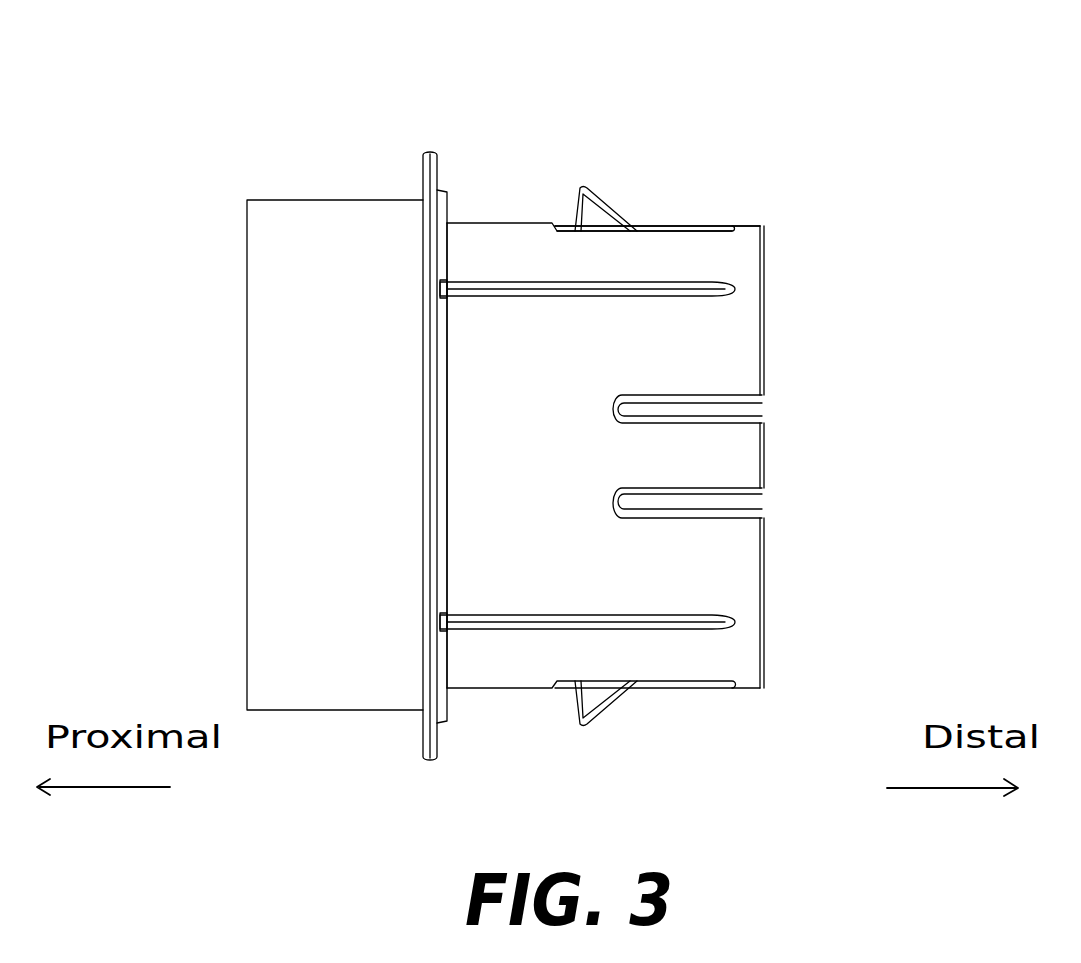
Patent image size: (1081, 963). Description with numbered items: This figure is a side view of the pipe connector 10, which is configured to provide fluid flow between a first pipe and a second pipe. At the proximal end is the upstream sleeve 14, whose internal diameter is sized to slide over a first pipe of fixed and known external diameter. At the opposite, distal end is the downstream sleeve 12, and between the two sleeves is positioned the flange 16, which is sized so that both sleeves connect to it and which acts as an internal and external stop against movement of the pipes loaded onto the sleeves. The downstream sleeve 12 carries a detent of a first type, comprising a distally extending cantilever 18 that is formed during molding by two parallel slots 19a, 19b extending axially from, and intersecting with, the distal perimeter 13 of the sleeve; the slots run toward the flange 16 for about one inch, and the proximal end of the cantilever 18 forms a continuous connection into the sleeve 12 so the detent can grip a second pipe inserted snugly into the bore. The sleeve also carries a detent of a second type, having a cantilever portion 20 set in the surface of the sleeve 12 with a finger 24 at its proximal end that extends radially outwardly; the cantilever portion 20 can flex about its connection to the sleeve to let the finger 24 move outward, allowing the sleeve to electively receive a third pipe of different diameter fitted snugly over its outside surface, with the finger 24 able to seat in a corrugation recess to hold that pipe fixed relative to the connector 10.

The pipe connector 10 is at (645, 84).
The downstream sleeve 12 is at (727, 340).
The distal perimeter 13 is at (763, 608).
The upstream sleeve 14 is at (255, 317).
The flange 16 is at (442, 163).
The cantilever 18 is at (723, 452).
The slot 19a is at (763, 407).
The slot 19b is at (768, 500).
The cantilever portion 20 is at (682, 230).
The finger 24 is at (597, 217).